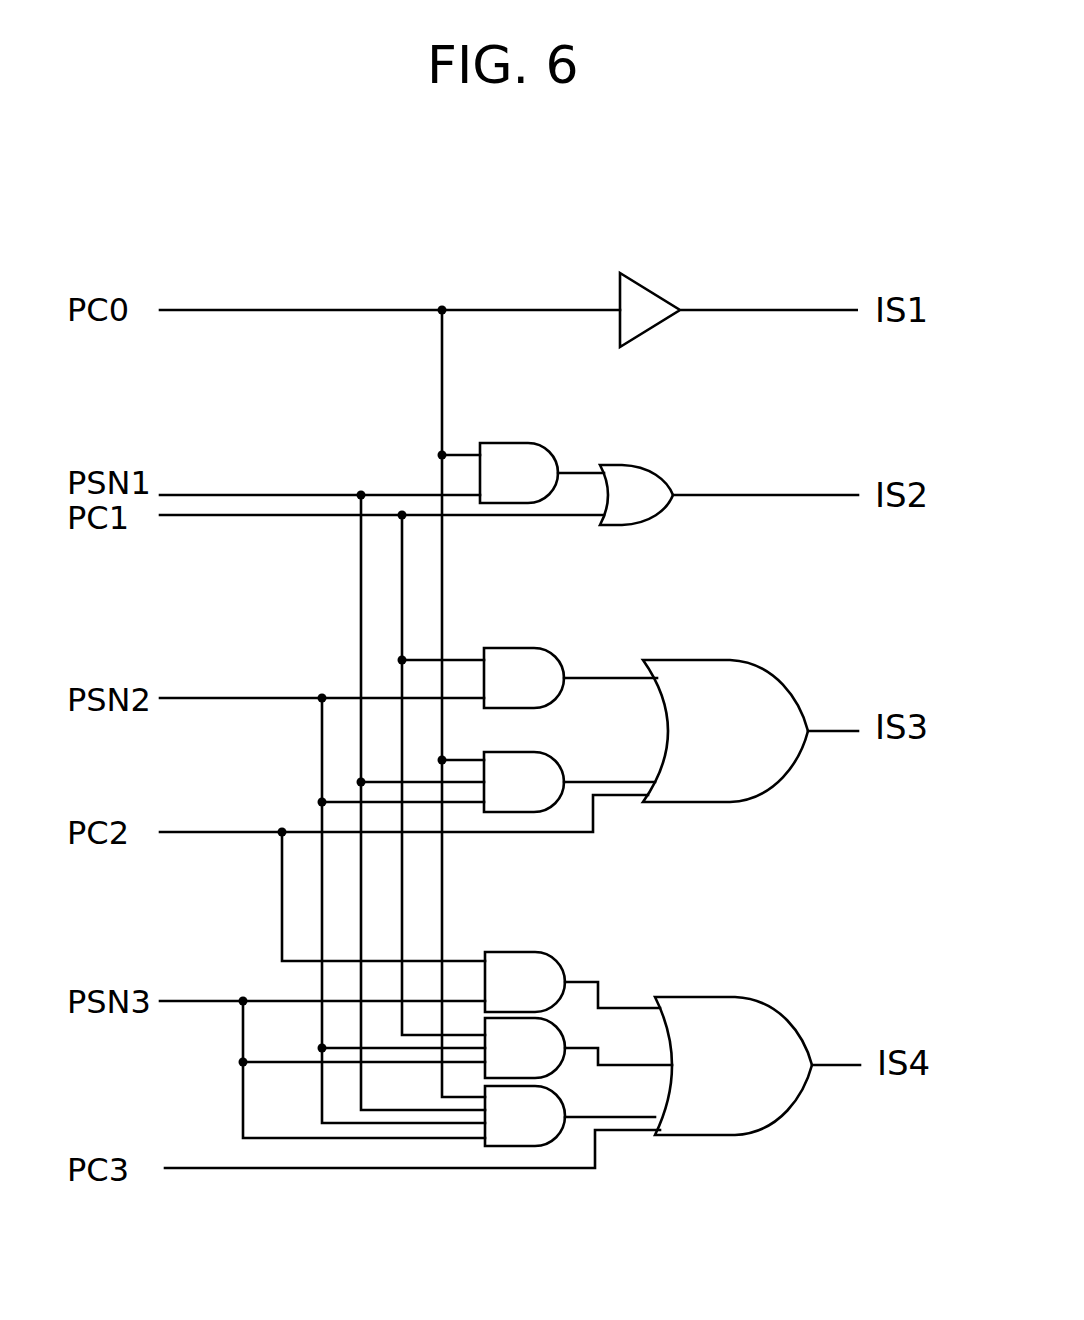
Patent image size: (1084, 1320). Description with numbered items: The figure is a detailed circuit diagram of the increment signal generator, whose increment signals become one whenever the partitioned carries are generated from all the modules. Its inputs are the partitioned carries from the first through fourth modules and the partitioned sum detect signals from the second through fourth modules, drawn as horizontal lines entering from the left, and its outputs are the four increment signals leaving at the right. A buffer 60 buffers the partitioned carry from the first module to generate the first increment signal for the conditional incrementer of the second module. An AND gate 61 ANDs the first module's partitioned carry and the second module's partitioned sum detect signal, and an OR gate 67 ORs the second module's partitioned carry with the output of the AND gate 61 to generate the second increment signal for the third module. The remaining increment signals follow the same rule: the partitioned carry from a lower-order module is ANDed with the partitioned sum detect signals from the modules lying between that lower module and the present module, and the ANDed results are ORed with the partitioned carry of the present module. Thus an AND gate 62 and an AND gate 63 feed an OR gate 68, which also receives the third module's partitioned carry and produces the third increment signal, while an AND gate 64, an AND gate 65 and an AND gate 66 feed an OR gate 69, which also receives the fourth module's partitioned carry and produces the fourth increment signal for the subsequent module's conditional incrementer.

The buffer 60 is at (676, 284).
The AND gate 61 is at (556, 457).
The AND gate 62 is at (562, 661).
The AND gate 63 is at (562, 765).
The AND gate 64 is at (563, 965).
The AND gate 65 is at (562, 1064).
The AND gate 66 is at (562, 1140).
The OR gate 67 is at (668, 482).
The OR gate 68 is at (767, 678).
The OR gate 69 is at (770, 1014).